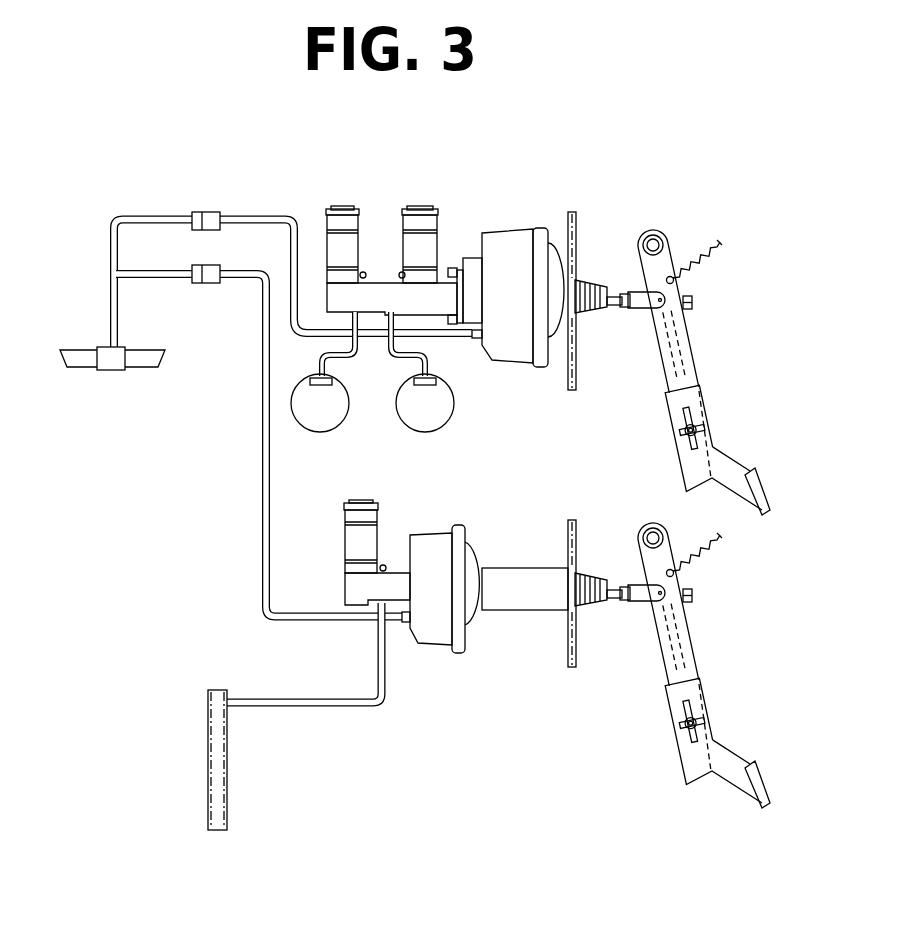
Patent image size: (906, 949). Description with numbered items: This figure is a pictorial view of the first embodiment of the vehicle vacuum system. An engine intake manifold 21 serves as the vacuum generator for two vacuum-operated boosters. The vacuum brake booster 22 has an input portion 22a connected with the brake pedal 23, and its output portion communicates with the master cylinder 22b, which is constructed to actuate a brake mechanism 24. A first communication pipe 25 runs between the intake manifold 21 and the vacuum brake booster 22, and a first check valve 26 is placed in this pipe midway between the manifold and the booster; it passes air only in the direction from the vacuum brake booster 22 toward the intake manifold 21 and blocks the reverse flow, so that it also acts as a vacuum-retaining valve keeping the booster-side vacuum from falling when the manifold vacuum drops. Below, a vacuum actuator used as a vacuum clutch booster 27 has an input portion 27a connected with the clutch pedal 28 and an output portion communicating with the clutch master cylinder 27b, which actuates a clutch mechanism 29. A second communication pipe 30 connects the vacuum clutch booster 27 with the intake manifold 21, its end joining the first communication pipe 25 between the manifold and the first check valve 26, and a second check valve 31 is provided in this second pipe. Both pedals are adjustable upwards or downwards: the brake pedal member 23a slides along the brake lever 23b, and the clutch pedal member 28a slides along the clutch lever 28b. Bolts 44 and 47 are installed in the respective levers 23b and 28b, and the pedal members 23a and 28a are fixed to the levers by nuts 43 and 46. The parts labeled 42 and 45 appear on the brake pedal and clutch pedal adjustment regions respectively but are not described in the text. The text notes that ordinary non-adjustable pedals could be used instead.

The engine intake manifold 21 is at (87, 348).
The vacuum brake booster 22 is at (512, 232).
The input portion 22a is at (592, 279).
The master cylinder 22b is at (385, 290).
The brake pedal 23 is at (703, 378).
The brake pedal member 23a is at (757, 482).
The brake lever 23b is at (680, 327).
The brake mechanism 24 is at (453, 405).
The first communication pipe 25 is at (278, 215).
The first check valve 26 is at (208, 212).
The vacuum clutch booster 27 is at (442, 537).
The input portion 27a is at (600, 572).
The clutch master cylinder 27b is at (398, 583).
The clutch pedal 28 is at (703, 660).
The clutch pedal member 28a is at (762, 778).
The clutch lever 28b is at (665, 643).
The clutch mechanism 29 is at (207, 753).
The second communication pipe 30 is at (262, 508).
The second check valve 31 is at (208, 285).
The adjustable bracket of first pedal 42 is at (692, 407).
The nut 43 is at (702, 425).
The bolt 44 is at (685, 432).
The adjustable bracket of second pedal 45 is at (688, 708).
The nut 46 is at (700, 723).
The bolt 47 is at (683, 727).